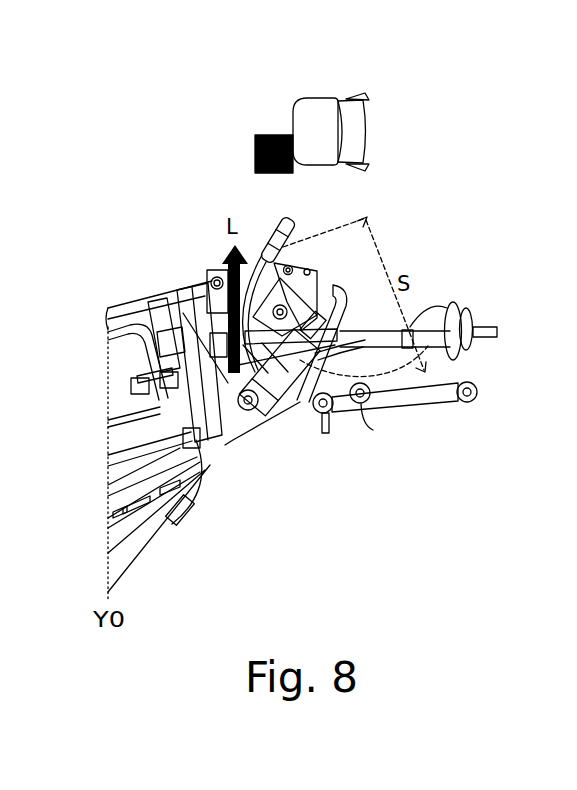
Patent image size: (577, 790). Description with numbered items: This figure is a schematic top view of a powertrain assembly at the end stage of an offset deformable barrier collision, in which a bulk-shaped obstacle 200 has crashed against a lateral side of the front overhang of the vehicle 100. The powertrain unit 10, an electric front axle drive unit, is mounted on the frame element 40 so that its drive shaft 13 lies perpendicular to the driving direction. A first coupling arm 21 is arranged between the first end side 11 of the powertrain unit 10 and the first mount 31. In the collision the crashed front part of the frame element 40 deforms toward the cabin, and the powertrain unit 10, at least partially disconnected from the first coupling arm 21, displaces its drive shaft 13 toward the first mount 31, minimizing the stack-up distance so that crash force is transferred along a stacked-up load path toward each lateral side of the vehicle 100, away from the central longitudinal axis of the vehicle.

The vehicle 100 is at (315, 113).
The obstacle 200 is at (255, 152).
The powertrain unit 10 is at (123, 303).
The first coupling arm 21 is at (160, 300).
The first mount 31 is at (205, 272).
The first end side 11 is at (233, 418).
The drive shaft 13 is at (277, 420).
The frame element 40 is at (148, 530).